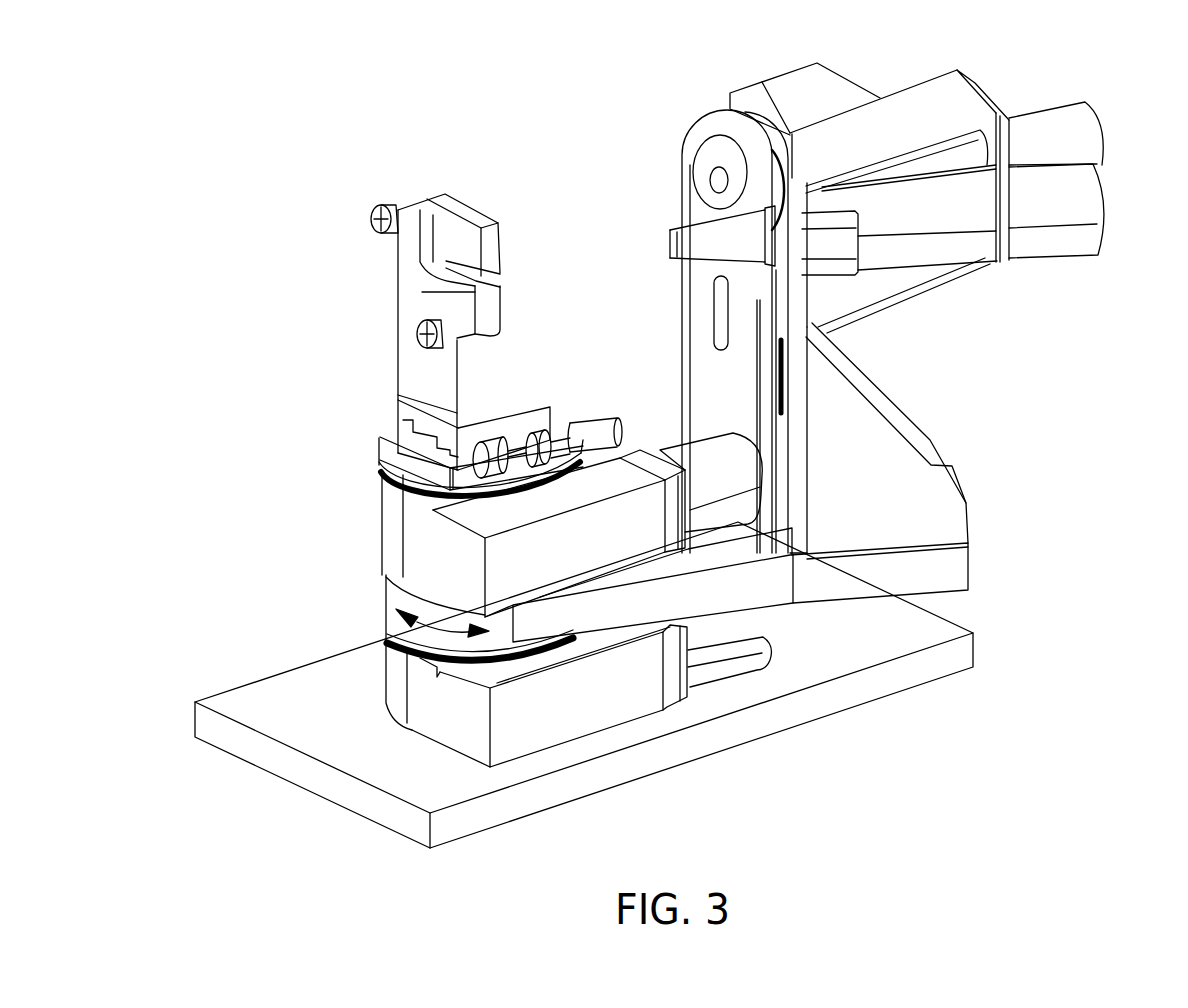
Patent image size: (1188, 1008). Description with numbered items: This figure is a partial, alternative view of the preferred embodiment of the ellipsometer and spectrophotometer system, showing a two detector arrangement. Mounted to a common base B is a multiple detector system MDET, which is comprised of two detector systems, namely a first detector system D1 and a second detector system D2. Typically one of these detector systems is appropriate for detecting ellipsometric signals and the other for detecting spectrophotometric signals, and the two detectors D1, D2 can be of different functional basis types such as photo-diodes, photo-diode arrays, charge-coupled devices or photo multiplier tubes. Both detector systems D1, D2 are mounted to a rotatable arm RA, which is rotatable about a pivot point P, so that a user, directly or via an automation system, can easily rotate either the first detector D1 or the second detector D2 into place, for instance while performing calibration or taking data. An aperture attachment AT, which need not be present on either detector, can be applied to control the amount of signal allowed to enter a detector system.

The common base B is at (817, 742).
The polarizer P is at (364, 599).
The rotatable arm RA is at (990, 567).
The multiple detector system MDET is at (992, 364).
The first detector system D1 is at (1062, 94).
The second detector system D2 is at (1046, 262).
The aperture attachment AT is at (667, 268).